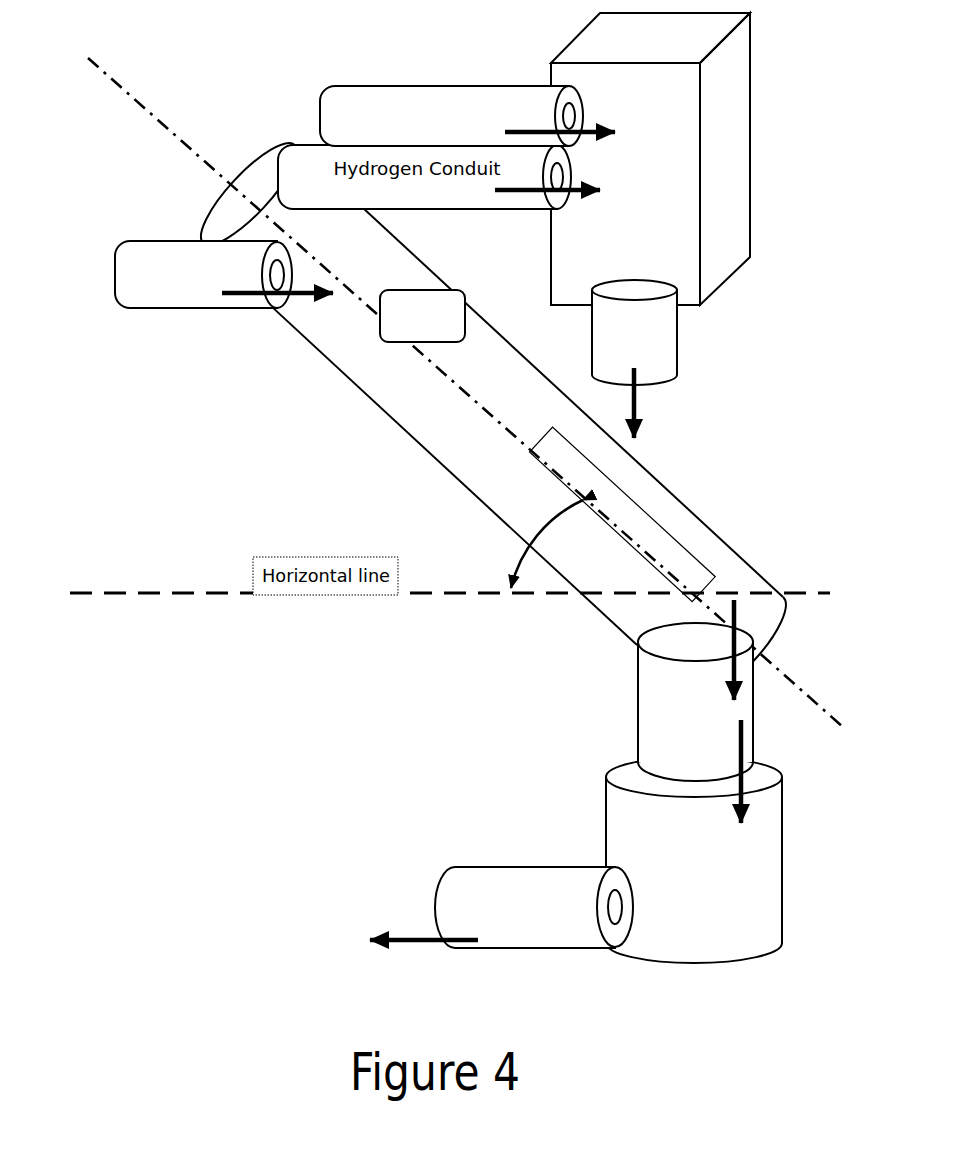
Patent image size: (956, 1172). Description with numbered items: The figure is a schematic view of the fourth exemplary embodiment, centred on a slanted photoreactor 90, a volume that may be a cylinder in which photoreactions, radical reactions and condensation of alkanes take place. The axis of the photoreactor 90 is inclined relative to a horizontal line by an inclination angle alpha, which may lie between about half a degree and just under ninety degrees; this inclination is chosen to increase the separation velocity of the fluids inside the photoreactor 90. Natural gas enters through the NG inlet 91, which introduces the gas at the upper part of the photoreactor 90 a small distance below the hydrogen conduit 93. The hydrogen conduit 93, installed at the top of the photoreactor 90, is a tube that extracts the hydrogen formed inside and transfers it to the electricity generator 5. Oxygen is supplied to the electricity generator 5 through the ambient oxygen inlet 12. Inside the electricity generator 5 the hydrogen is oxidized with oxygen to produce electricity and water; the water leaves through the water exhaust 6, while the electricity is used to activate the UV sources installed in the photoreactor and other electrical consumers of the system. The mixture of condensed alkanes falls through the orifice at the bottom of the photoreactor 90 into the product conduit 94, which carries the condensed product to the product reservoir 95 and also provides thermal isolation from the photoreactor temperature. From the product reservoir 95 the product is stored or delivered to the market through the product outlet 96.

The electricity generator 5 is at (635, 88).
The water exhaust 6 is at (650, 370).
The ambient oxygen inlet 12 is at (475, 95).
The slanted photoreactor 90 is at (410, 400).
The NG inlet 91 is at (148, 283).
The hydrogen conduit 93 is at (310, 170).
The product conduit 94 is at (690, 697).
The product reservoir 95 is at (745, 897).
The product outlet 96 is at (510, 893).